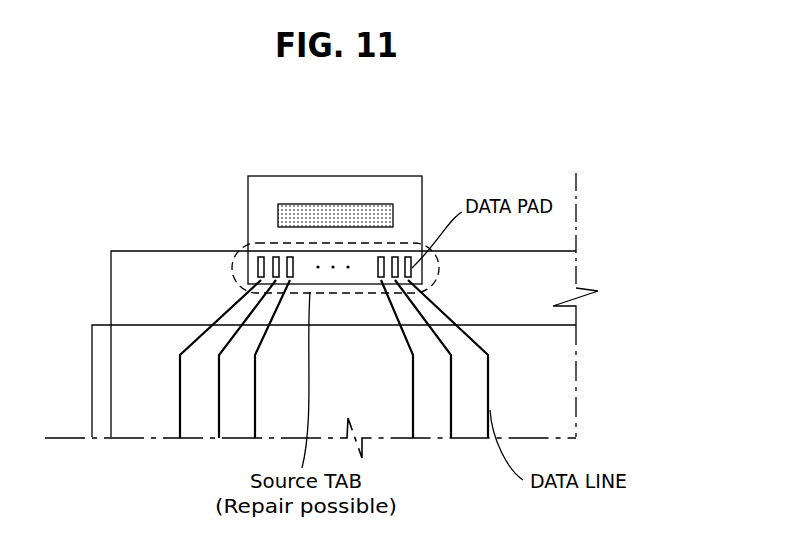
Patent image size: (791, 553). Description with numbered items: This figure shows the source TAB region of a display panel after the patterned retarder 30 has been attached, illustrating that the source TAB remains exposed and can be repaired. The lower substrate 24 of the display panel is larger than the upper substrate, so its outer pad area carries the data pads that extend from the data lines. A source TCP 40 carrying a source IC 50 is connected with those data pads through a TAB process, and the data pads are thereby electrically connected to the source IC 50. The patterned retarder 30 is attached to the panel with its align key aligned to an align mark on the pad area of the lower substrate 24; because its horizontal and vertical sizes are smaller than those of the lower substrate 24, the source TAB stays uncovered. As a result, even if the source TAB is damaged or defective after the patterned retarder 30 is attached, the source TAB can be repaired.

The lower substrate 24 is at (183, 252).
The patterned retarder 30 is at (102, 325).
The source TCP 40 is at (365, 176).
The source IC 50 is at (300, 204).